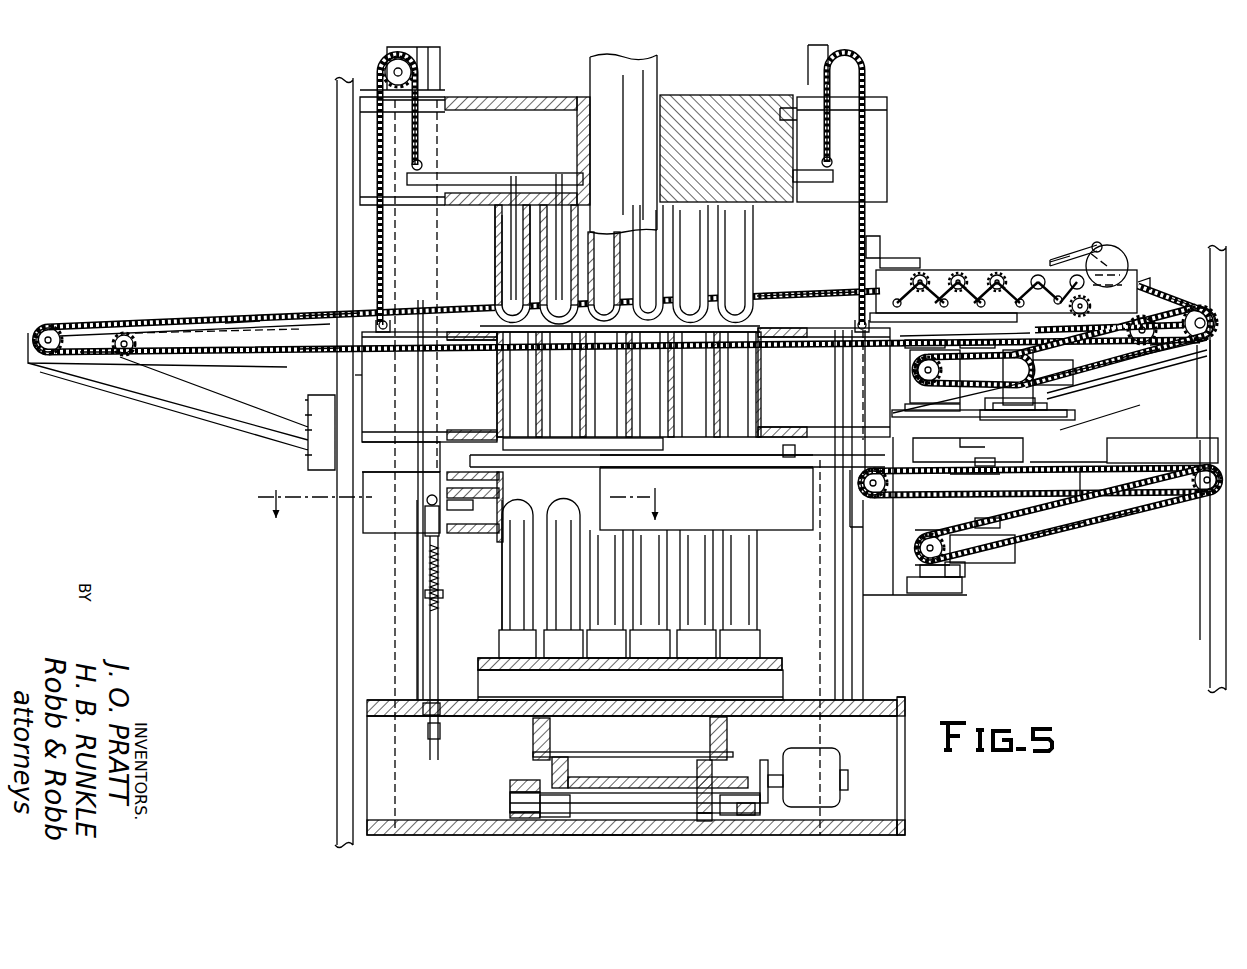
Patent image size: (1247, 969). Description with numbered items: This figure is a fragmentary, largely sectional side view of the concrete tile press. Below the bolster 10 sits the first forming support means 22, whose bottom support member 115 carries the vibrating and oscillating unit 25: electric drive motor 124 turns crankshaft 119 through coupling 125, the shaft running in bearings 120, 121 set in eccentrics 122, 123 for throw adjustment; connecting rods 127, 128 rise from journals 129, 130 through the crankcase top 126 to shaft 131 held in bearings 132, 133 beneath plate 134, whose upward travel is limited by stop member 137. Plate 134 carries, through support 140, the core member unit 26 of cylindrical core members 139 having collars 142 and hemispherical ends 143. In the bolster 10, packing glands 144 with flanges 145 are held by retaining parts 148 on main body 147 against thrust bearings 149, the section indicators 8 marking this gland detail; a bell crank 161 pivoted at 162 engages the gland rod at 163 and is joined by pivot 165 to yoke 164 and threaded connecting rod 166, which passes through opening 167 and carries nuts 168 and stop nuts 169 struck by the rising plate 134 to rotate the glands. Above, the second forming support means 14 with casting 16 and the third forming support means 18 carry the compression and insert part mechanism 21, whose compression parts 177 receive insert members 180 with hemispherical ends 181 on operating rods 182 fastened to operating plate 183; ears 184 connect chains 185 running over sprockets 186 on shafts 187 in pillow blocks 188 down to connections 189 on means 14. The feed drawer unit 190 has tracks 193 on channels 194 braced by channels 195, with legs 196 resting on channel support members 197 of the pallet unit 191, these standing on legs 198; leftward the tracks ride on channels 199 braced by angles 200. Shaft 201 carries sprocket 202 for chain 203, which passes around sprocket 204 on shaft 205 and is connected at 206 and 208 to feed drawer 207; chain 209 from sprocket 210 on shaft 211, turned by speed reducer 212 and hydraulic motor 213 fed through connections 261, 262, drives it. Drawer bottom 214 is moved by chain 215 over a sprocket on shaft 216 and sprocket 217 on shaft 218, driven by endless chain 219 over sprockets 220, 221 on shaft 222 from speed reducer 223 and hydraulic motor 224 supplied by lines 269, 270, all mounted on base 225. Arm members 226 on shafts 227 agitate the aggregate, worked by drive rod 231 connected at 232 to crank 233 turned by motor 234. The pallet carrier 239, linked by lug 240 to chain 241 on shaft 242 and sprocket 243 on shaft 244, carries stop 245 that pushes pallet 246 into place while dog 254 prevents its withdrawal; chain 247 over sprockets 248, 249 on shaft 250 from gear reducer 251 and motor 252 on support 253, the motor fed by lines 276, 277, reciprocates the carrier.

The section line 8- 8 is at (461, 513).
The bolster 10 is at (772, 534).
The second forming support means 14 is at (352, 376).
The casting 16 is at (890, 420).
The third forming support means 18 is at (887, 118).
The compression and insert part mechanism 21 is at (493, 232).
The first forming support means 22 is at (335, 792).
The vibrating and oscillating unit 25 is at (600, 822).
The core member unit 26 is at (760, 600).
The bottom support member 115 is at (387, 817).
The crankshaft member 119 is at (625, 793).
The bearing 120 is at (510, 812).
The bearing 121 is at (748, 818).
The eccentric 122 is at (510, 796).
The eccentric 123 is at (762, 775).
The electric drive motor 124 is at (830, 755).
The coupling 125 is at (780, 820).
The top 126 is at (513, 780).
The connecting rod 127 is at (568, 770).
The connecting rod 128 is at (697, 768).
The journal 129 is at (548, 820).
The journal 130 is at (705, 822).
The shaft 131 is at (600, 752).
The bearing 132 is at (550, 732).
The bearing 133 is at (700, 717).
The plate 134 is at (627, 698).
The stop member 137 is at (393, 700).
The core members 139 is at (501, 592).
The support 140 is at (540, 670).
The collar 142 is at (497, 642).
The hemispherical end 143 is at (520, 565).
The packing gland 144 is at (512, 334).
The flange 145 is at (663, 453).
The main body 147 is at (568, 565).
The retaining part 148 is at (401, 456).
The bearing 149 is at (498, 542).
The bell crank 161 is at (447, 506).
The pivot 162 is at (470, 512).
The engagement point 163 is at (460, 492).
The yoke 164 is at (430, 540).
The pivot 165 is at (427, 512).
The threaded connecting rod 166 is at (416, 610).
The opening 167 is at (425, 715).
The nuts 168 is at (433, 740).
The stop nuts 169 is at (443, 594).
The compression parts 177 is at (495, 264).
The insert member 180 is at (497, 348).
The hemispherical end 181 is at (482, 342).
The operating rod 182 is at (560, 176).
The operating plate 183 is at (511, 176).
The ear 184 is at (424, 163).
The chain 185 is at (417, 122).
The sprocket 186 is at (413, 70).
The shaft 187 is at (385, 62).
The pillow block 188 is at (808, 68).
The connection 189 is at (385, 318).
The feed drawer unit 190 is at (1005, 268).
The pallet unit 191 is at (1074, 468).
The track 193 is at (292, 316).
The channel 194 is at (1205, 305).
The channel member 195 is at (1170, 358).
The leg 196 is at (1210, 385).
The channel support member 197 is at (1200, 525).
The leg 198 is at (1210, 593).
The channel 199 is at (85, 328).
The channel or angle 200 is at (148, 400).
The shaft 201 is at (1195, 342).
The sprocket 202 is at (1203, 345).
The chain 203 is at (302, 312).
The sprocket 204 is at (57, 360).
The shaft 205 is at (48, 325).
The connection 206 is at (870, 247).
The feed drawer 207 is at (975, 258).
The connection 208 is at (1162, 290).
The chain 209 is at (980, 417).
The sprocket 210 is at (915, 372).
The shaft 211 is at (931, 333).
The speed reducer 212 is at (905, 405).
The hydraulic motor 213 is at (983, 333).
The bottom 214 is at (983, 297).
The chain 215 is at (238, 316).
The shaft 216 is at (1147, 342).
The sprocket 217 is at (150, 330).
The shaft 218 is at (123, 333).
The endless chain 219 is at (1190, 400).
The sprocket 220 is at (1165, 365).
The sprocket 221 is at (1050, 380).
The shaft 222 is at (1050, 420).
The speed reducer 223 is at (1005, 412).
The hydraulic motor 224 is at (1100, 419).
The base 225 is at (1065, 462).
The arm members 226 is at (918, 273).
The shafts 227 is at (930, 290).
The drive rod 231 is at (1074, 254).
The connection 232 is at (1099, 243).
The crank 233 is at (1125, 255).
The motor 234 is at (1128, 275).
The pallet carrier 239 is at (998, 466).
The lug 240 is at (990, 472).
The chain 241 is at (1112, 452).
The shaft 242 is at (1205, 468).
The sprocket 243 is at (866, 500).
The shaft 244 is at (857, 483).
The stop 245 is at (965, 446).
The pallet 246 is at (707, 458).
The chain 247 is at (1088, 528).
The sprocket 248 is at (1132, 517).
The sprocket 249 is at (940, 578).
The shaft 250 is at (927, 562).
The gear reducer 251 is at (962, 572).
The motor 252 is at (973, 545).
The support 253 is at (960, 580).
The dog 254 is at (806, 458).
The connection 261 is at (957, 372).
The connection 262 is at (1038, 340).
The line 269 is at (1088, 376).
The line 270 is at (1086, 312).
The line 276 is at (975, 521).
The line 277 is at (1000, 555).